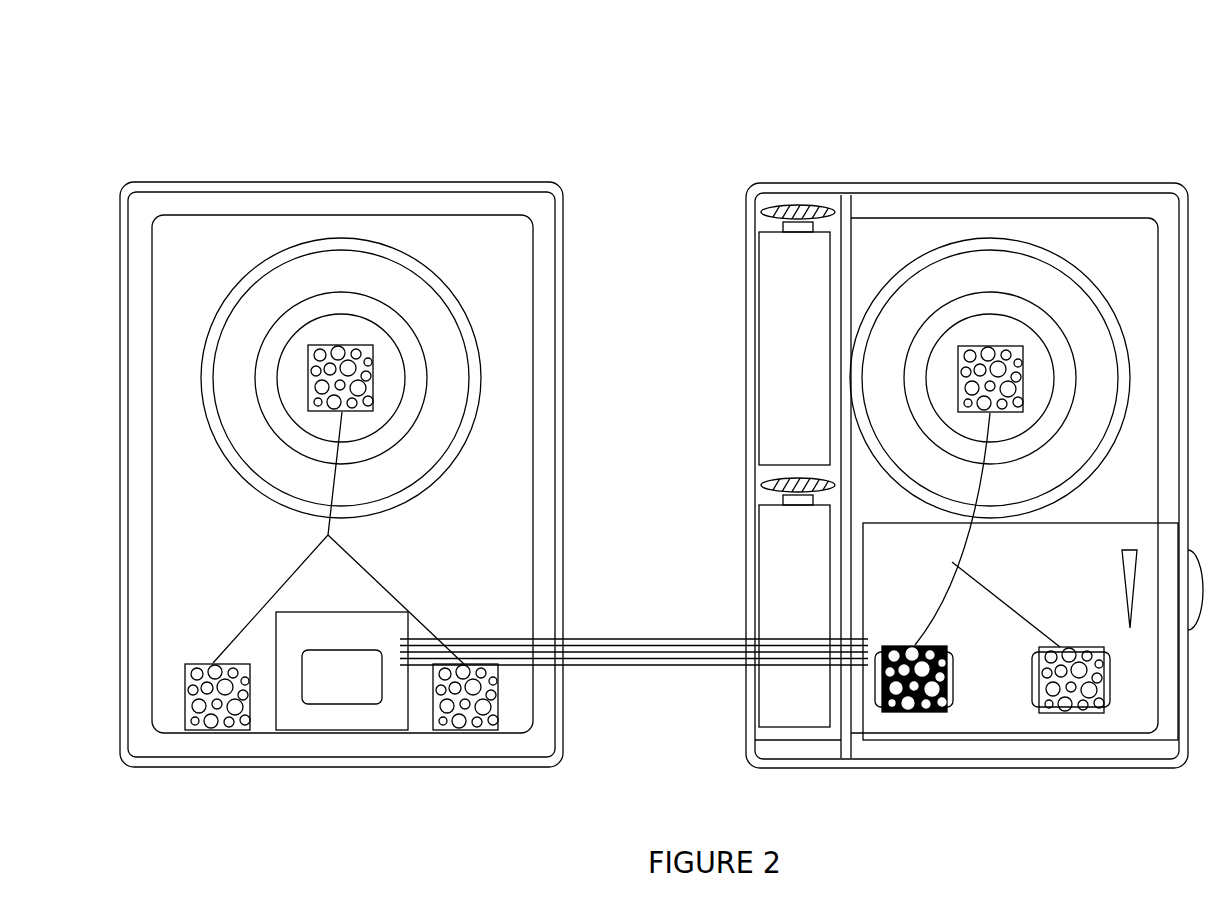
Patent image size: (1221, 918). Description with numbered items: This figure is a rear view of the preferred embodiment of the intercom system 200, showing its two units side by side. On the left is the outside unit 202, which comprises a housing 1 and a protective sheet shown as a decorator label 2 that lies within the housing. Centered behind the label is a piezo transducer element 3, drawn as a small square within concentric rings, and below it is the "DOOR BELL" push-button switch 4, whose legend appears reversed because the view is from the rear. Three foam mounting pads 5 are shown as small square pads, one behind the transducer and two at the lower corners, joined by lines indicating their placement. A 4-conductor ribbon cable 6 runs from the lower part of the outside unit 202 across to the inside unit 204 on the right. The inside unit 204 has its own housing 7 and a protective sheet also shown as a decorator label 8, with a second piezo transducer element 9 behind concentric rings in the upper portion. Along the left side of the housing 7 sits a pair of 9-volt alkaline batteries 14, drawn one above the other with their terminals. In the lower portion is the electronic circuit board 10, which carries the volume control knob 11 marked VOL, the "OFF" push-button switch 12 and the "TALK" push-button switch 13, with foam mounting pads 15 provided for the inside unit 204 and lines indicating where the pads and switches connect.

The intercom system 200 is at (655, 96).
The outside unit 202 is at (572, 177).
The inside unit 204 is at (738, 177).
The housing 1 is at (418, 182).
The decorator label 2 is at (282, 213).
The piezo transducer element 3 is at (395, 312).
The "DOOR BELL" push-button switch 4 is at (342, 648).
The foam mounting pads 5 is at (328, 535).
The 4-conductor ribbon cable 6 is at (707, 638).
The housing 7 is at (933, 185).
The decorator label 8 is at (1098, 217).
The piezo transducer element 9 is at (1055, 327).
The electronic circuit board 10 is at (1085, 735).
The volume control knob 11 is at (1117, 577).
The "OFF" push-button switch 12 is at (1028, 663).
The "TALK" push-button switch 13 is at (955, 665).
The 9-volt alkaline batteries 14 is at (797, 563).
The foam mounting pads 15 is at (952, 562).